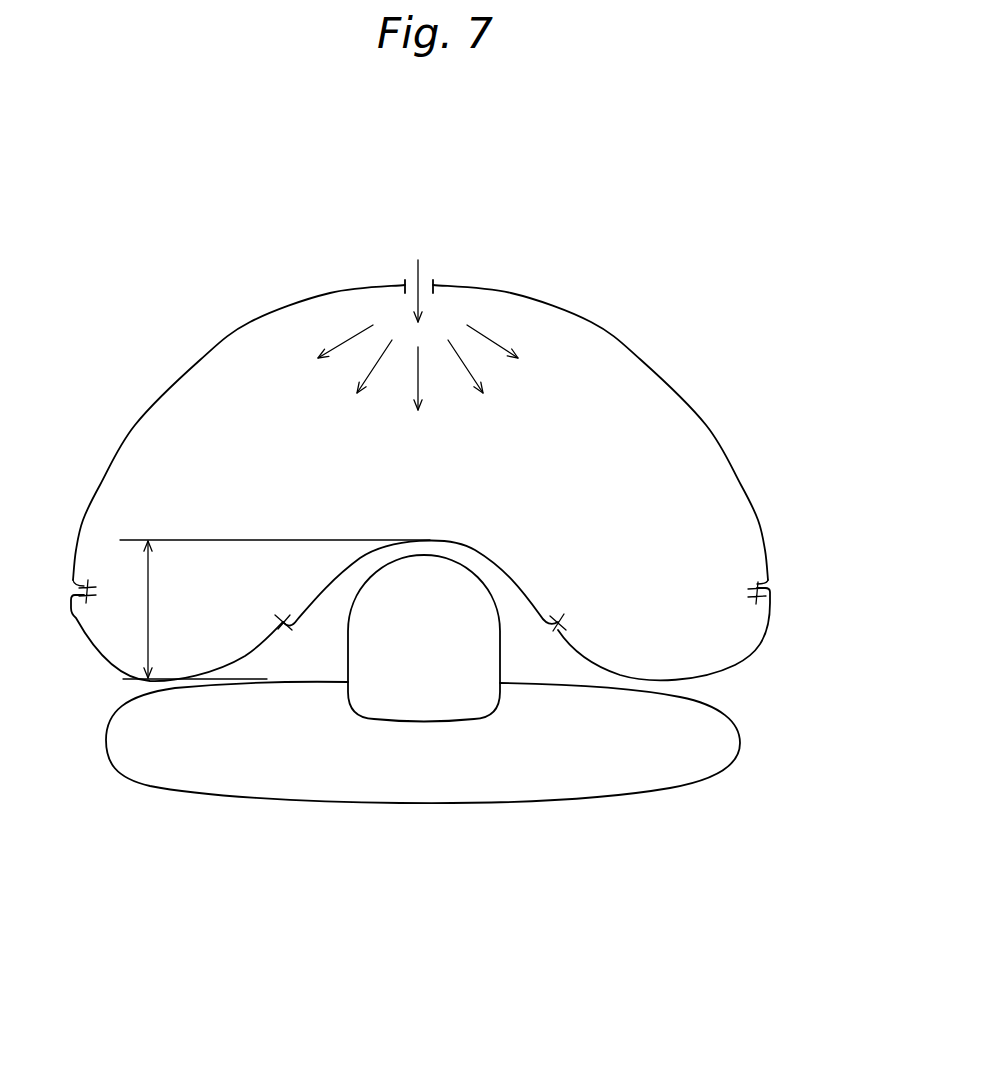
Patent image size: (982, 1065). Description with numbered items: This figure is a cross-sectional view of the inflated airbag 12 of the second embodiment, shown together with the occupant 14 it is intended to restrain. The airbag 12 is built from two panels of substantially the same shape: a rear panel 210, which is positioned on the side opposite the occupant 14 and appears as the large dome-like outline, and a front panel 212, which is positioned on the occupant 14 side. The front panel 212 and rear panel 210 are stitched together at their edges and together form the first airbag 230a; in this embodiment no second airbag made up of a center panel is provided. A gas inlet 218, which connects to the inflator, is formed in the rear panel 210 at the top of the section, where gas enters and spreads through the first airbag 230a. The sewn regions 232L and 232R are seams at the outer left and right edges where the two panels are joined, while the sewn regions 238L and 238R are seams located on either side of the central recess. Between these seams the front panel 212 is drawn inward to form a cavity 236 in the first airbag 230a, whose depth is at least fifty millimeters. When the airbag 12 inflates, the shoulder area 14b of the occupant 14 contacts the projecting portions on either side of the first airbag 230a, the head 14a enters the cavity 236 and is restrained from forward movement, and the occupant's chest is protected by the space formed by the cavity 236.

The airbag 12 is at (283, 305).
The occupant 14 is at (369, 818).
The head 14a is at (445, 707).
The shoulder area 14b is at (155, 775).
The rear panel 210 is at (687, 403).
The front panel 212 is at (595, 665).
The gas inlet 218 is at (402, 283).
The first airbag 230a is at (572, 403).
The sewn region 232L is at (73, 610).
The sewn region 232R is at (770, 580).
The cavity 236 is at (332, 605).
The sewn region 238L is at (283, 622).
The sewn region 238R is at (570, 622).